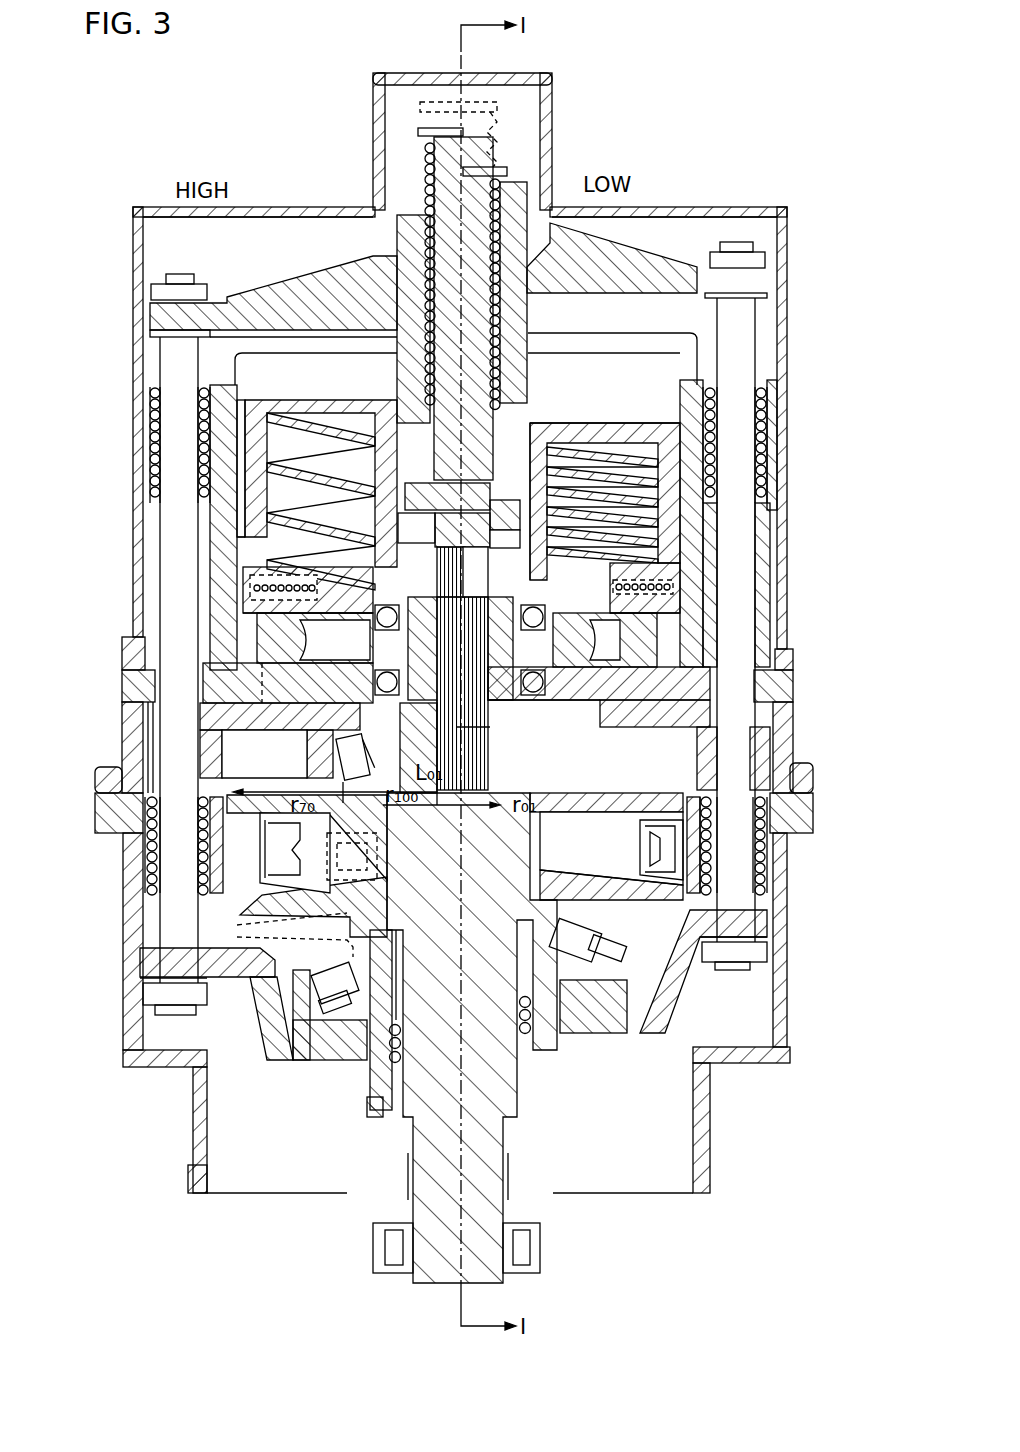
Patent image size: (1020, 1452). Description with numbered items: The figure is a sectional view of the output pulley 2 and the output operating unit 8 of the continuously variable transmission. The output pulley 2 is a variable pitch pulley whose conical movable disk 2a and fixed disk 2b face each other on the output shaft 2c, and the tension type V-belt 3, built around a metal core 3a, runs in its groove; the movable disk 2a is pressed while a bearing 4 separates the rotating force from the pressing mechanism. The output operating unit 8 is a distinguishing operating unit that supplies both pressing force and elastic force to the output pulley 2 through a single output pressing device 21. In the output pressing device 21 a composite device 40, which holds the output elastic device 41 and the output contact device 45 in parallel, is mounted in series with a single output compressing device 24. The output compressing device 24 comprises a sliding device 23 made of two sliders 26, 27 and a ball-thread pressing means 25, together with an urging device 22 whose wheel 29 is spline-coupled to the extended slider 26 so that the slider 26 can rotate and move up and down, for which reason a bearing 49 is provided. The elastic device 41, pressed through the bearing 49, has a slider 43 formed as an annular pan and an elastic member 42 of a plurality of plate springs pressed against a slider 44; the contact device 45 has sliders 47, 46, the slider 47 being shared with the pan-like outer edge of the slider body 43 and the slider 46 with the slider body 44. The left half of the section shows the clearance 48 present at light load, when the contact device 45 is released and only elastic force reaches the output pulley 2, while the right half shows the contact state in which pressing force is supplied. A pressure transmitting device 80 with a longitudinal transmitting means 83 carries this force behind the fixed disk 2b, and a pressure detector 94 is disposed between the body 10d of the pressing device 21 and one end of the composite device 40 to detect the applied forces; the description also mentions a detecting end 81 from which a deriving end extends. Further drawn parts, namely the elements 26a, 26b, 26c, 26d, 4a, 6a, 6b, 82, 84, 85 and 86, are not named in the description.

The output operating unit 8 is at (148, 175).
The output pressing device 21 is at (350, 234).
The screw shaft end 26a is at (430, 157).
The pressure transmitting device 80 is at (700, 232).
The detecting end 81 is at (290, 302).
The bolt 82 is at (170, 342).
The slider 27 is at (530, 312).
The ball-thread pressing means 25 is at (427, 370).
The slider 26 is at (473, 480).
The bearing 49 is at (515, 542).
The spline portion 26d is at (475, 545).
The hub portion 26c is at (557, 733).
The bearing 26b is at (470, 585).
The slider 47 is at (225, 500).
The composite device 40 is at (238, 384).
The output contact device 45 is at (222, 538).
The clearance 48 is at (239, 554).
The output elastic device 41 is at (310, 388).
The output compressing device 24 is at (540, 385).
The sliding device 23 is at (513, 413).
The slider 43 is at (647, 423).
The slider 44 is at (265, 580).
The slider 46 is at (683, 572).
The body 10d is at (260, 610).
The pressure detector 94 is at (300, 625).
The gear hub 4a is at (378, 616).
The urging device 22 is at (627, 658).
The wheel 29 is at (657, 640).
The bearing 6b is at (367, 763).
The ball bearing 85 is at (760, 413).
The elastic member 42 is at (697, 463).
The longitudinal transmitting means 83 is at (763, 515).
The ball bearing 86 is at (143, 867).
The output pulley 2 is at (277, 937).
The fixed disk 2b is at (265, 810).
The movable disk 2a is at (262, 905).
The output shaft 2c is at (492, 1132).
The nut 6a is at (540, 1250).
The V-belt 3 is at (620, 830).
The metal core 3a is at (642, 870).
The bearing 4 is at (620, 1030).
The bracket 84 is at (690, 940).